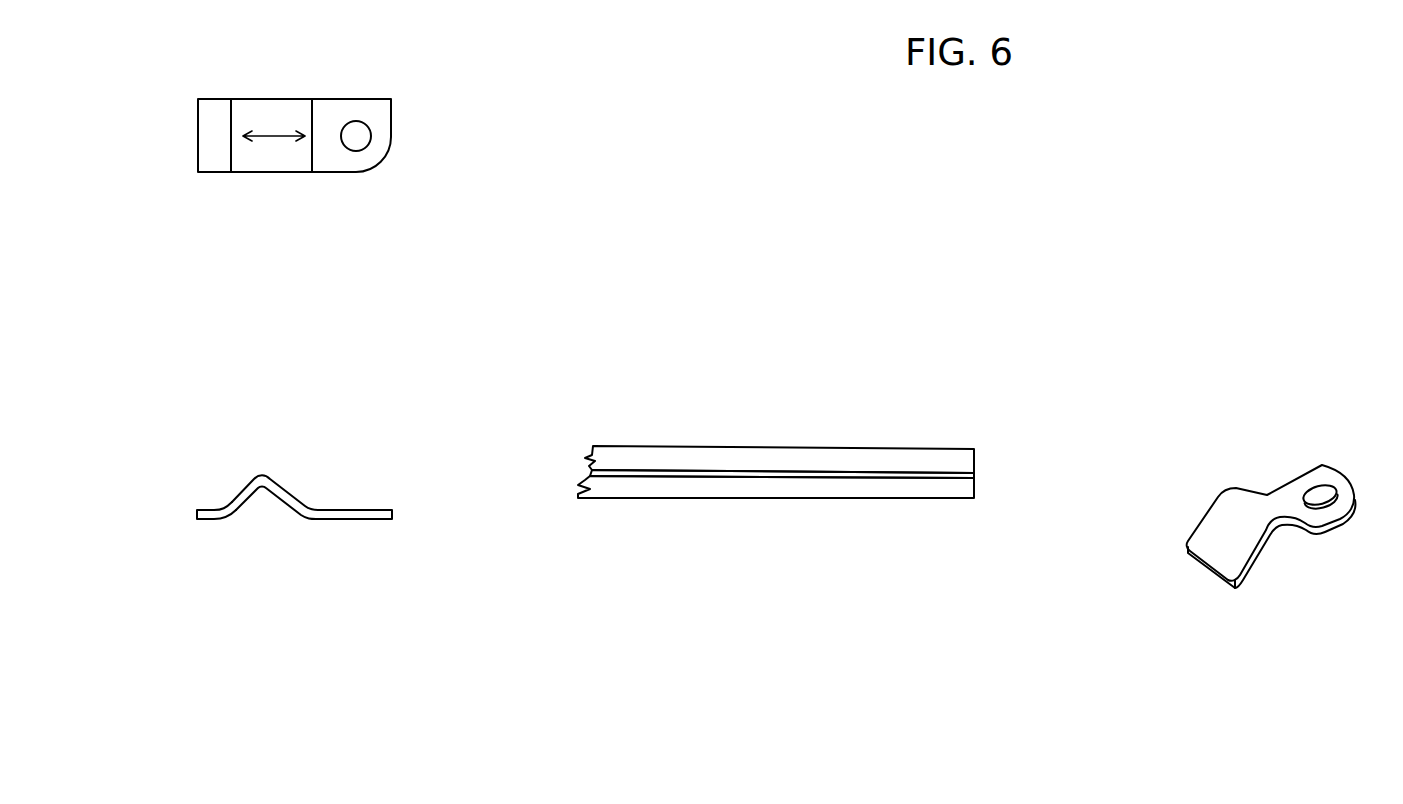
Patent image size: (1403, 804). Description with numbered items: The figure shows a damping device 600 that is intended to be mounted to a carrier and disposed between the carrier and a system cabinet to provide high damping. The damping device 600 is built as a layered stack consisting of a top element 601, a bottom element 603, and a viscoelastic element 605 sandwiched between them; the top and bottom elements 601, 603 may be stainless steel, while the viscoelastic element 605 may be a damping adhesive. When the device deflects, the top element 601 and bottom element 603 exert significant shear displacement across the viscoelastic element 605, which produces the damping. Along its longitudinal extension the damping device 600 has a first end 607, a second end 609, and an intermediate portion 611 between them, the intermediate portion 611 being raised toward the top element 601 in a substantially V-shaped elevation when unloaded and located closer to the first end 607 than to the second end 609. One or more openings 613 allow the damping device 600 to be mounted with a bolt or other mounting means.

The damping device 600 is at (1304, 588).
The top element 601 is at (962, 461).
The bottom element 603 is at (963, 490).
The viscoelastic element 605 is at (963, 473).
The first end 607 is at (203, 520).
The second end 609 is at (392, 519).
The intermediate portion 611 is at (258, 485).
The opening 613 is at (360, 137).